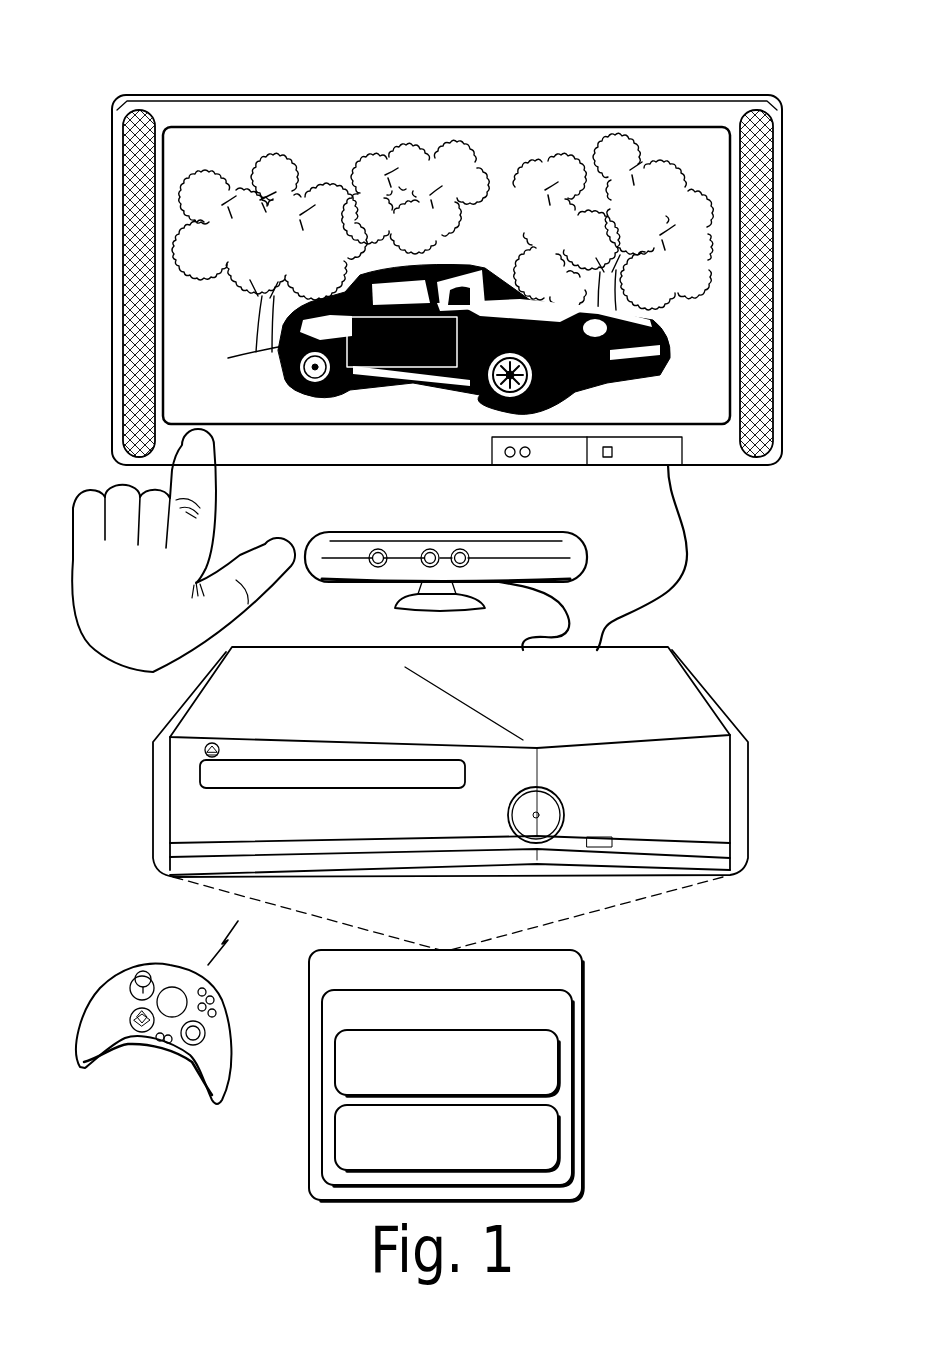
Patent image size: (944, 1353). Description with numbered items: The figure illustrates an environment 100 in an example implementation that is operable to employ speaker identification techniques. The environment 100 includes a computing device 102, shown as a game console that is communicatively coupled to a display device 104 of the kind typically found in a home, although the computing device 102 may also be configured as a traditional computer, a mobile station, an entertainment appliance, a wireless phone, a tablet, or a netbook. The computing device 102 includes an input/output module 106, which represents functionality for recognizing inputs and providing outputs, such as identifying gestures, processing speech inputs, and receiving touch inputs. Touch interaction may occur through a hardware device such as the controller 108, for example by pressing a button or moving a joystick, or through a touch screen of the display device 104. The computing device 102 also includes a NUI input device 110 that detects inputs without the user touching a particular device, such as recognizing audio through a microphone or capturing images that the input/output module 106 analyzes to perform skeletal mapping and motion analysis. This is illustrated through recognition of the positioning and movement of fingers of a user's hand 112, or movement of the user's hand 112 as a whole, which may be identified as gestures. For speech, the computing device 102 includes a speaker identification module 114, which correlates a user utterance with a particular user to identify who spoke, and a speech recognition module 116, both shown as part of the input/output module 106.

The environment 100 is at (155, 67).
The computing device 102 is at (550, 981).
The display device 104 is at (211, 156).
The input/output module 106 is at (563, 1021).
The controller 108 is at (150, 965).
The NUI input device 110 is at (446, 530).
The user's hand 112 is at (146, 636).
The speaker identification module 114 is at (500, 1084).
The speech recognition module 116 is at (500, 1159).